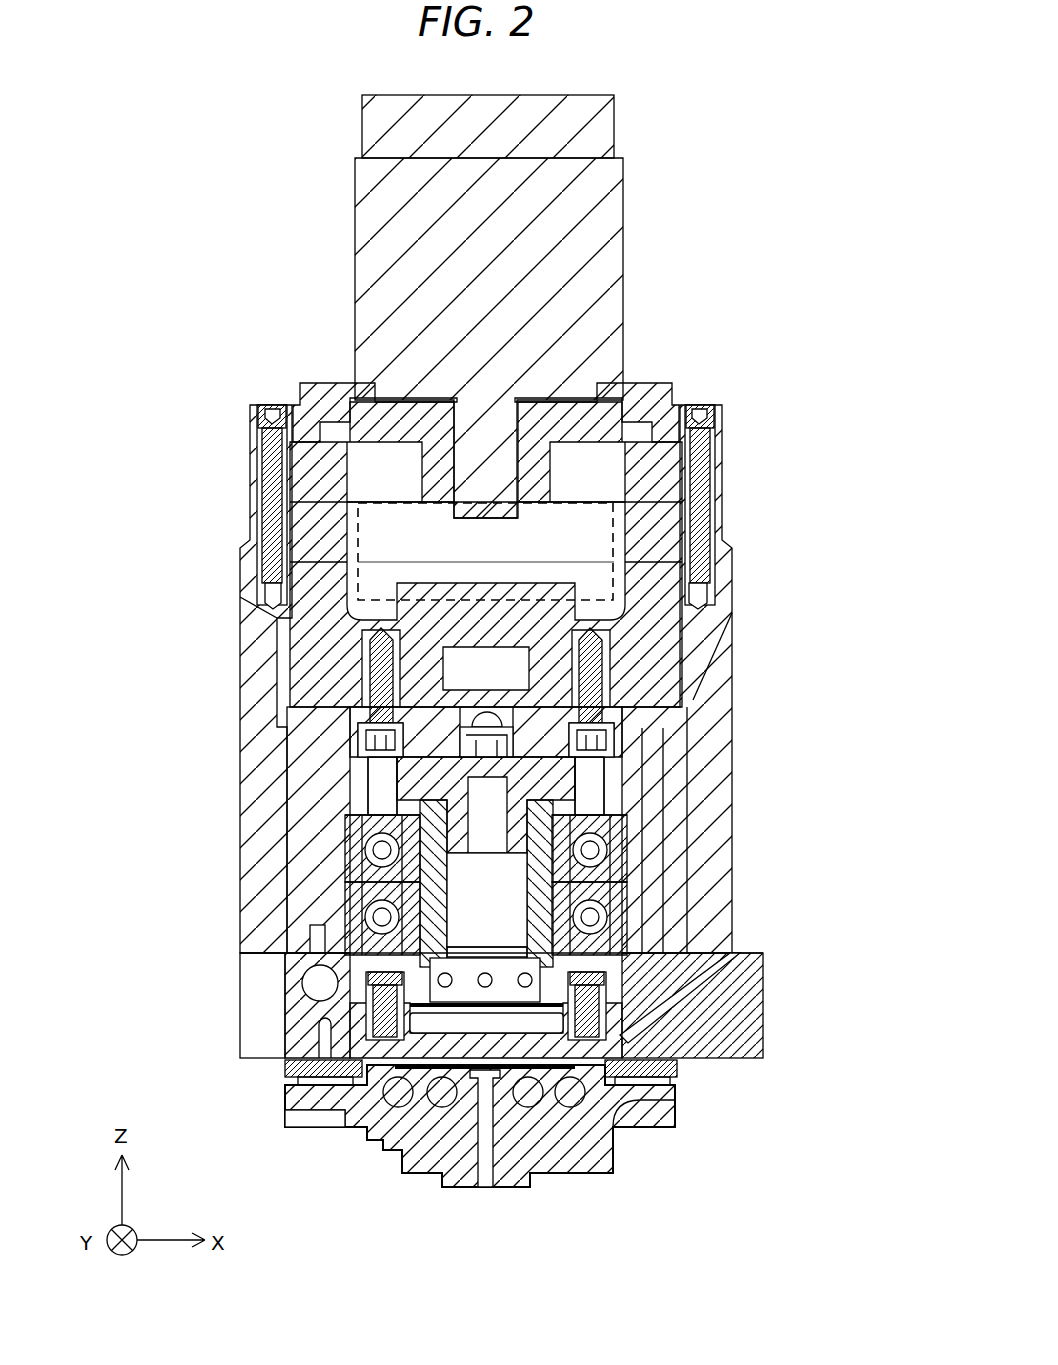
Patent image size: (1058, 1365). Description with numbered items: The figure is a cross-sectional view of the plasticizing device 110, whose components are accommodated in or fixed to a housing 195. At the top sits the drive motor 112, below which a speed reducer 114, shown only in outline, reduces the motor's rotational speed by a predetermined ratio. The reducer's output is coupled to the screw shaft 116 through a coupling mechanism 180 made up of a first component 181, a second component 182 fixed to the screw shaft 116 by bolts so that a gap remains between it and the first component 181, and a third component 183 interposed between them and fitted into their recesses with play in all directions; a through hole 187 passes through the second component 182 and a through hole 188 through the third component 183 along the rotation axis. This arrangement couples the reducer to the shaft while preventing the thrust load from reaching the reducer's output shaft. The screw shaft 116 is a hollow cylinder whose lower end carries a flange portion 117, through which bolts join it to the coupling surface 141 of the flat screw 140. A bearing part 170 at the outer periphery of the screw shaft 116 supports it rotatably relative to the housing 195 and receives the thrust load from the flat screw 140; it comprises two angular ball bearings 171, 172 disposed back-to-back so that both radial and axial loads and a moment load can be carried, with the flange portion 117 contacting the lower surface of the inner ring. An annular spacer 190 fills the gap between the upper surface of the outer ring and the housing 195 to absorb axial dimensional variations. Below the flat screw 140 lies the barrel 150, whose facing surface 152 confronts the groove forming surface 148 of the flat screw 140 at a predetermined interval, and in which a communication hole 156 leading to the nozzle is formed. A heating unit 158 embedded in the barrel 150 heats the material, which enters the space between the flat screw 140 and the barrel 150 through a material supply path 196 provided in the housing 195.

The plasticizing device 110 is at (434, 511).
The drive motor 112 is at (628, 245).
The speed reducer 114 is at (617, 533).
The screw shaft 116 is at (620, 798).
The flange portion 117 is at (360, 1005).
The flat screw 140 is at (686, 1068).
The coupling surface 141 is at (360, 943).
The groove forming surface 148 is at (565, 1108).
The barrel 150 is at (523, 1151).
The facing surface 152 is at (600, 1108).
The communication hole 156 is at (485, 1180).
The heating unit 158 is at (442, 1108).
The bearing part 170 is at (607, 885).
The angular ball bearing 171 is at (626, 855).
The angular ball bearing 172 is at (630, 912).
The coupling mechanism 180 is at (358, 735).
The first component 181 is at (345, 742).
The second component 182 is at (375, 815).
The third component 183 is at (380, 782).
The through hole 187 is at (600, 790).
The through hole 188 is at (612, 748).
The spacer 190 is at (626, 815).
The housing 195 is at (237, 655).
The material supply path 196 is at (720, 972).